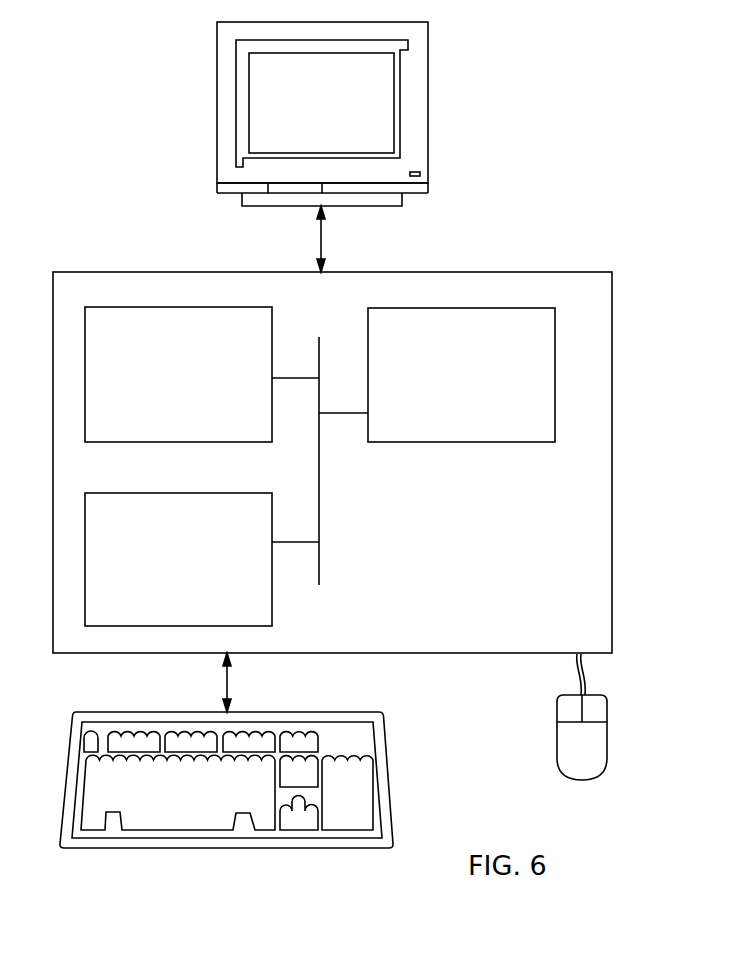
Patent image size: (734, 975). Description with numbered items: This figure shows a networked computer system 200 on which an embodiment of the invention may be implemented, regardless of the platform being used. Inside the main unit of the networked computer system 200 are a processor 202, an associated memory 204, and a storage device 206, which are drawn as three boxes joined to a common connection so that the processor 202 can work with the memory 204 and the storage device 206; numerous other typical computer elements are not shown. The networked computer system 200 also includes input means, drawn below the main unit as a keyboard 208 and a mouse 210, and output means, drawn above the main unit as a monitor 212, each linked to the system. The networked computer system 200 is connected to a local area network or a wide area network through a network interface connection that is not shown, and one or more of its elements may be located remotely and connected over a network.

The networked computer system 200 is at (625, 151).
The processor 202 is at (462, 386).
The memory 204 is at (160, 386).
The storage device 206 is at (157, 570).
The keyboard 208 is at (154, 814).
The mouse 210 is at (564, 756).
The monitor 212 is at (304, 118).